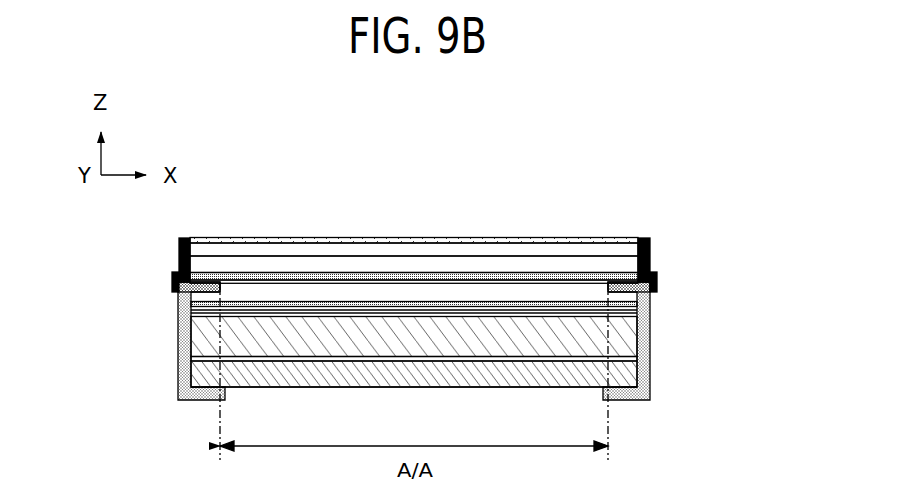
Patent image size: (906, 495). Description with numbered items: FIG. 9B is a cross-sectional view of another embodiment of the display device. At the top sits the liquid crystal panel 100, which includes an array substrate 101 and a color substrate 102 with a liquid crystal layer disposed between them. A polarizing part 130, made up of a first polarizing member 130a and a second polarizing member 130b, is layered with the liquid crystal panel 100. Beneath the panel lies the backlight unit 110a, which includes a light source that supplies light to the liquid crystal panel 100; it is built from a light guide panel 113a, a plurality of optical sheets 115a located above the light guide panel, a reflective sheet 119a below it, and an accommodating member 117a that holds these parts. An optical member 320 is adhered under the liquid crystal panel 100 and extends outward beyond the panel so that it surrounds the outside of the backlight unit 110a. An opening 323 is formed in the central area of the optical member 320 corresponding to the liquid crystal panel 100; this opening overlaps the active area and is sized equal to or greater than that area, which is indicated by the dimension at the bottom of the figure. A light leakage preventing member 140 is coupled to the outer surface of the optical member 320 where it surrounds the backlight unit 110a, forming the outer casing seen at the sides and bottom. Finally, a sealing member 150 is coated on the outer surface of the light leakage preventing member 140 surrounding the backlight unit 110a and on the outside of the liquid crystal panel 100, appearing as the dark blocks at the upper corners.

The liquid crystal panel 100 is at (414, 202).
The array substrate 101 is at (343, 177).
The color substrate 102 is at (333, 253).
The polarizing part 130 is at (414, 215).
The first polarizing member 130a is at (523, 193).
The second polarizing member 130b is at (514, 241).
The opening 323 is at (384, 287).
The optical member 320 is at (624, 287).
The sealing member 150 is at (172, 280).
The light leakage preventing member 140 is at (177, 367).
The backlight unit 110a is at (488, 346).
The optical sheets 115a is at (652, 310).
The light guide panel 113a is at (625, 332).
The reflective sheet 119a is at (618, 355).
The accommodating member 117a is at (623, 378).